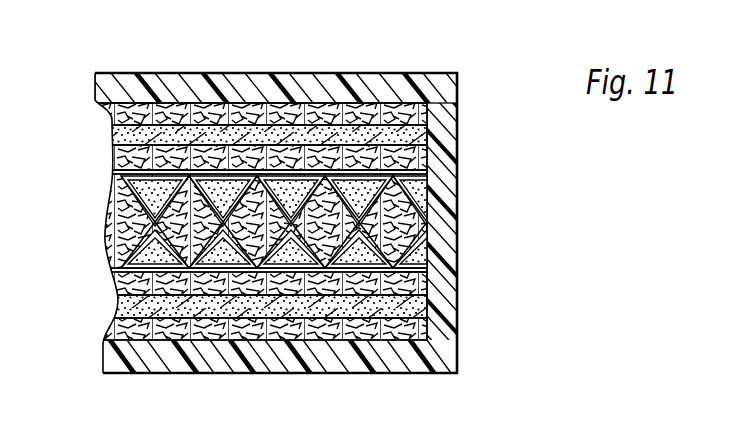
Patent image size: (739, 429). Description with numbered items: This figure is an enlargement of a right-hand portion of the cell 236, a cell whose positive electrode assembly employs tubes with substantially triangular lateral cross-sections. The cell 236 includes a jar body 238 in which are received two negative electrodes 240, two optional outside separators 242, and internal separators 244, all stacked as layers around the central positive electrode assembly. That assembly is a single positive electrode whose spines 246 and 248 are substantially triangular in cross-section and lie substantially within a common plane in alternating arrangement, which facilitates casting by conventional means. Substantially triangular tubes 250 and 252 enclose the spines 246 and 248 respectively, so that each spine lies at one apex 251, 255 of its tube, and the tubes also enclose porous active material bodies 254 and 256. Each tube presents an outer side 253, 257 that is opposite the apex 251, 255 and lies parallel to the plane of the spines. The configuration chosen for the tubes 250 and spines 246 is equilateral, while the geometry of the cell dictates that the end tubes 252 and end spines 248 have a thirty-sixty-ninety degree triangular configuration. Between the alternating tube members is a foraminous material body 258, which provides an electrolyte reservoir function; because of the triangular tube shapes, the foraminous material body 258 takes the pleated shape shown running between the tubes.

The cell 236 is at (332, 63).
The jar body 238 is at (436, 96).
The negative electrode 240 is at (420, 131).
The outside separator 242 is at (335, 142).
The internal separator 244 is at (418, 158).
The spine 246 is at (110, 210).
The end spine 248 is at (415, 232).
The triangular tube 250 is at (110, 193).
The apex 251 is at (200, 168).
The end tube 252 is at (428, 175).
The outer side 253 is at (153, 73).
The porous active material body 254 is at (110, 183).
The apex 255 is at (287, 248).
The porous active material body 256 is at (290, 241).
The outer side 257 is at (377, 172).
The foraminous material body 258 is at (108, 235).